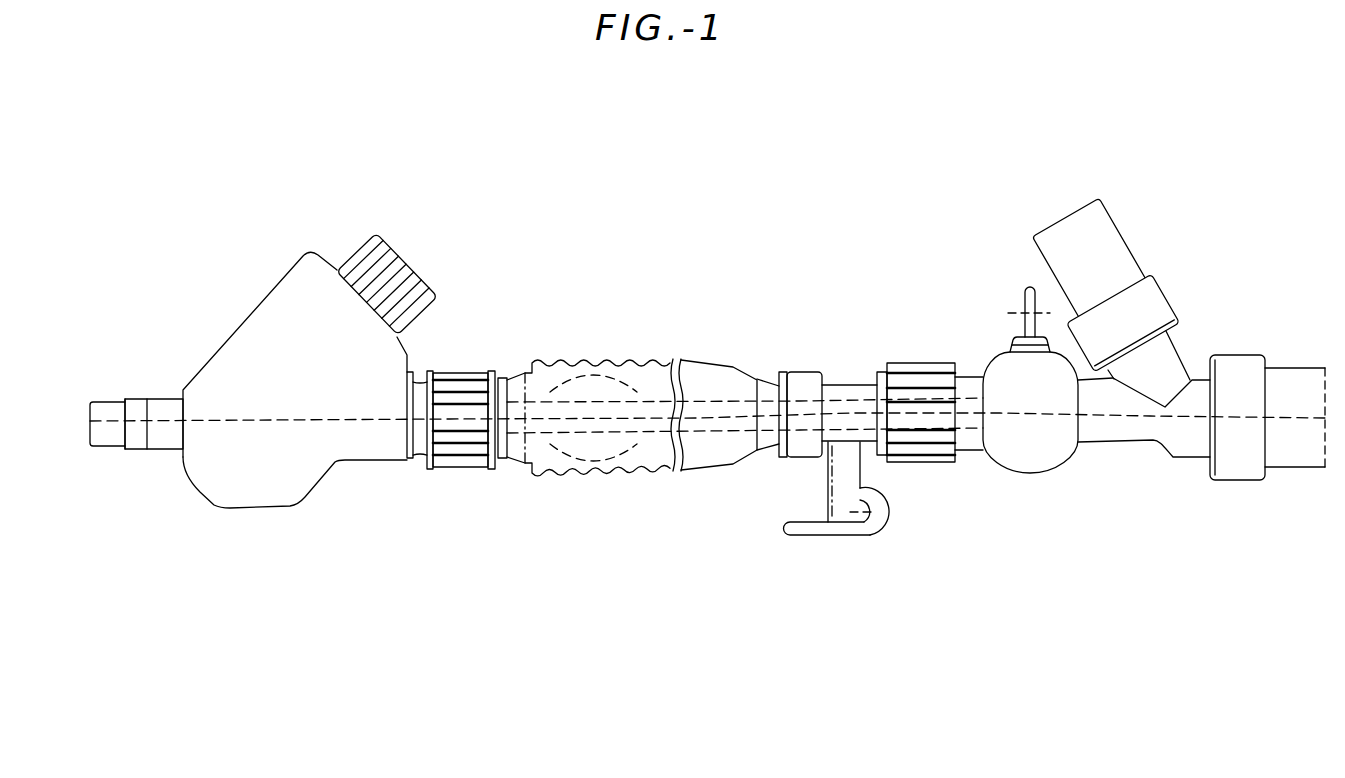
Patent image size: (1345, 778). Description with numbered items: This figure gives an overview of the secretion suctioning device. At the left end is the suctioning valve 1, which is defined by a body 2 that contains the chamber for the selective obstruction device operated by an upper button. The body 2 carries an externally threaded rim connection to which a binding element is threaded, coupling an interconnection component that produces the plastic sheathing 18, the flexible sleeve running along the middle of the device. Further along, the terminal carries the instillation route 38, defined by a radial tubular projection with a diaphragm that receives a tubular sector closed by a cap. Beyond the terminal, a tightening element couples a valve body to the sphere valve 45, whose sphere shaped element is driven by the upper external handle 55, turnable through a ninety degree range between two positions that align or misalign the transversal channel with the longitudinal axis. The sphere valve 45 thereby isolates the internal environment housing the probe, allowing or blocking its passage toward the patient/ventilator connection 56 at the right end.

The suctioning valve 1 is at (320, 215).
The body 2 is at (227, 333).
The plastic sheathing 18 is at (713, 365).
The instillation route 38 is at (800, 497).
The sphere valve 45 is at (1028, 485).
The upper external handle 55 is at (1025, 303).
The patient/ventilator connection 56 is at (1227, 302).